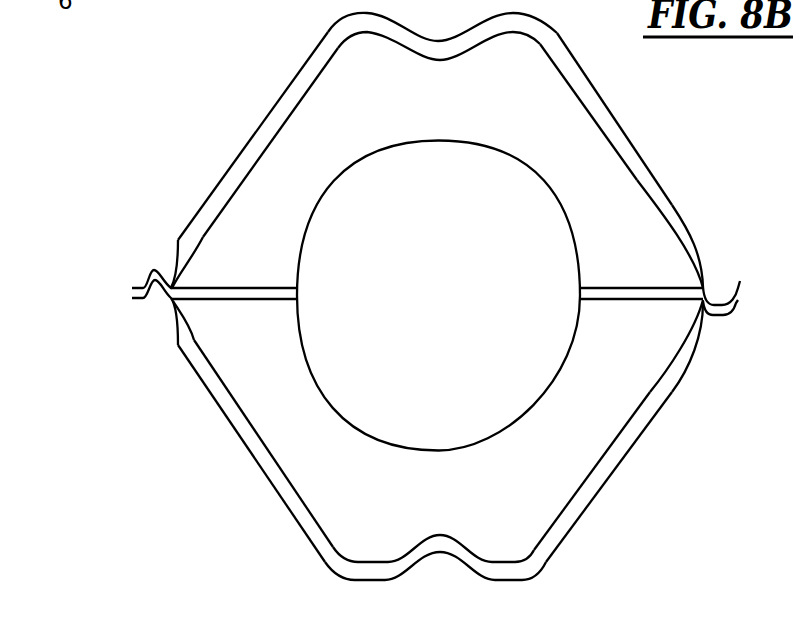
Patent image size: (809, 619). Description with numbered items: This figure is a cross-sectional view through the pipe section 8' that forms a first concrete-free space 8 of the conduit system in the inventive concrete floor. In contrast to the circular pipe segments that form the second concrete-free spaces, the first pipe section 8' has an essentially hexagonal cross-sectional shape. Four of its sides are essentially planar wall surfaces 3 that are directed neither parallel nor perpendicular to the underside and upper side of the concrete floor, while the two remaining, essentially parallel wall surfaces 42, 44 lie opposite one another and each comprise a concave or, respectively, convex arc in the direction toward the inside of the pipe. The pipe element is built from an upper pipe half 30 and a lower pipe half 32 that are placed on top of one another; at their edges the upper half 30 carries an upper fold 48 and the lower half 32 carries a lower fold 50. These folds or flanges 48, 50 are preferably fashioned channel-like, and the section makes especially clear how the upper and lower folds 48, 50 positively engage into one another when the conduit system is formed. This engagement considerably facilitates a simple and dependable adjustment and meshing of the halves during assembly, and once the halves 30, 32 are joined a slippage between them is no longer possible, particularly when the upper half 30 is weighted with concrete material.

The first concrete-free space 8 is at (417, 262).
The first pipe section 8' is at (734, 231).
The planar wall surface 3 is at (263, 118).
The upper pipe half 30 is at (658, 180).
The lower pipe half 32 is at (643, 432).
The wall surface 42 is at (393, 40).
The wall surface 44 is at (395, 553).
The upper fold 48 is at (740, 281).
The lower fold 50 is at (738, 301).